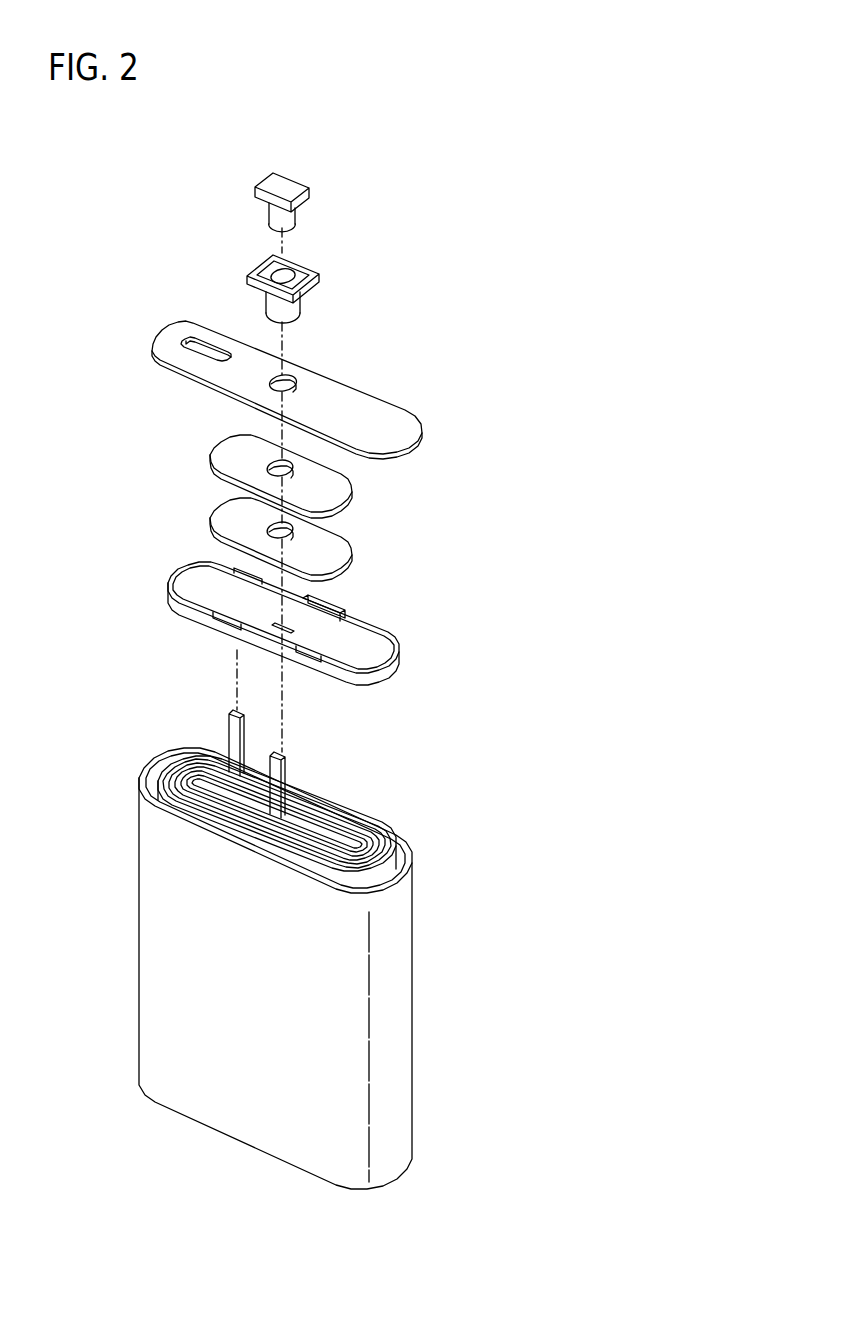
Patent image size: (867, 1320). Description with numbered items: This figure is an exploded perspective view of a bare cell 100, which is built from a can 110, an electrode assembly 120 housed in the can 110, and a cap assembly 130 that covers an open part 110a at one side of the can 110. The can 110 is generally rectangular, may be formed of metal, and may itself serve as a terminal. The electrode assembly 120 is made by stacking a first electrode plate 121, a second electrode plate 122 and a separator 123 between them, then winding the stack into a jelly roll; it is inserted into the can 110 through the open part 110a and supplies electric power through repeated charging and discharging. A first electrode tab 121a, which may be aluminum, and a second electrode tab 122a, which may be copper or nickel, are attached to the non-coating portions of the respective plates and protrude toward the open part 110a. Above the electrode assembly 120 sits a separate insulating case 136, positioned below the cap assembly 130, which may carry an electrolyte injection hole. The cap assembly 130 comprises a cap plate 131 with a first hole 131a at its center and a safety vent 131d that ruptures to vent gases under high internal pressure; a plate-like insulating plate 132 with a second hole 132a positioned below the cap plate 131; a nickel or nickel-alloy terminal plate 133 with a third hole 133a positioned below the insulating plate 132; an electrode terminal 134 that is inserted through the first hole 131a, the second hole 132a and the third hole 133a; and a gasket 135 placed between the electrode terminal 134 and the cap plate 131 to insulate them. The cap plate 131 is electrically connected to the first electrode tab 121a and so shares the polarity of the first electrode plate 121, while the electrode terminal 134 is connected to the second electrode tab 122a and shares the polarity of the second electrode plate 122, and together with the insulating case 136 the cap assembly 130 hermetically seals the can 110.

The bare cell 100 is at (152, 192).
The can 110 is at (150, 942).
The open part 110a is at (147, 786).
The electrode assembly 120 is at (369, 828).
The first electrode plate 121 is at (160, 770).
The first electrode tab 121a is at (228, 729).
The second electrode plate 122 is at (188, 759).
The second electrode tab 122a is at (282, 777).
The separator 123 is at (170, 761).
The cap assembly 130 is at (157, 308).
The cap plate 131 is at (410, 427).
The first hole 131a is at (291, 379).
The safety vent 131d is at (190, 347).
The insulating plate 132 is at (226, 447).
The second hole 132a is at (351, 496).
The terminal plate 133 is at (226, 510).
The third hole 133a is at (351, 557).
The electrode terminal 134 is at (288, 189).
The gasket 135 is at (298, 263).
The insulating case 136 is at (398, 668).